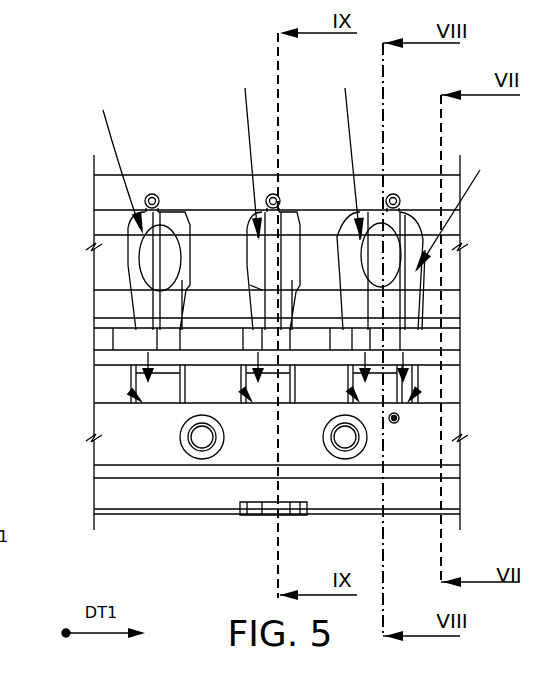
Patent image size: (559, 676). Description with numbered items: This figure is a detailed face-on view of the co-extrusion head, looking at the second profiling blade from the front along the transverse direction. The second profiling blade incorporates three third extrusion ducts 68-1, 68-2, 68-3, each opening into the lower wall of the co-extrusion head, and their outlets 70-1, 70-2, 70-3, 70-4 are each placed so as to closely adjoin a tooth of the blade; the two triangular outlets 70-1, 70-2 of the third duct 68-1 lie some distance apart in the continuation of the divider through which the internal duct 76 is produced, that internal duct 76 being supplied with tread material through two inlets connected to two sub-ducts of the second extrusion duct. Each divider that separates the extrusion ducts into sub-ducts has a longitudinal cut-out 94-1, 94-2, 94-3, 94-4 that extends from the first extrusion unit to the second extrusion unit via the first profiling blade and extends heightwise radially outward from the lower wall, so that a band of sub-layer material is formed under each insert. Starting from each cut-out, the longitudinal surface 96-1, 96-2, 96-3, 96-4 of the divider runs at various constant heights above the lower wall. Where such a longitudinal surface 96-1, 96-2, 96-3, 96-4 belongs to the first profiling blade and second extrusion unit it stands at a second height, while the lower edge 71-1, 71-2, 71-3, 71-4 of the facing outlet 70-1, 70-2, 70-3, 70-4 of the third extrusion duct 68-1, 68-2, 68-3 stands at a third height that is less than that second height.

The third extrusion duct 68-1 is at (407, 215).
The third extrusion duct 68-2 is at (263, 290).
The third extrusion duct 68-3 is at (163, 205).
The outlet 70-1 is at (425, 403).
The outlet 70-2 is at (365, 405).
The outlet 70-3 is at (250, 405).
The outlet 70-4 is at (142, 405).
The lower edge 71-1 is at (418, 389).
The lower edge 71-2 is at (349, 389).
The lower edge 71-3 is at (242, 389).
The lower edge 71-4 is at (130, 392).
The internal duct 76 is at (400, 405).
The longitudinal cut-out 94-1 is at (460, 208).
The longitudinal cut-out 94-2 is at (345, 150).
The longitudinal cut-out 94-3 is at (243, 151).
The longitudinal cut-out 94-4 is at (110, 159).
The longitudinal surface 96-1 is at (415, 302).
The longitudinal surface 96-2 is at (352, 277).
The longitudinal surface 96-3 is at (253, 283).
The longitudinal surface 96-4 is at (140, 307).